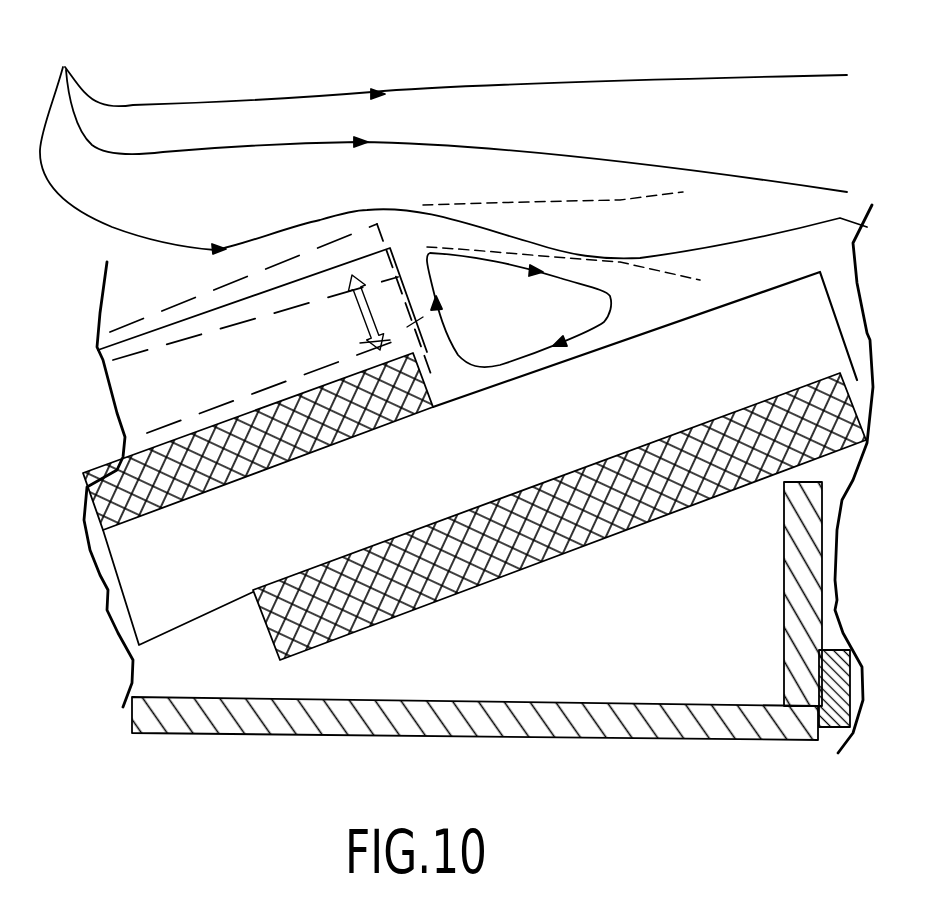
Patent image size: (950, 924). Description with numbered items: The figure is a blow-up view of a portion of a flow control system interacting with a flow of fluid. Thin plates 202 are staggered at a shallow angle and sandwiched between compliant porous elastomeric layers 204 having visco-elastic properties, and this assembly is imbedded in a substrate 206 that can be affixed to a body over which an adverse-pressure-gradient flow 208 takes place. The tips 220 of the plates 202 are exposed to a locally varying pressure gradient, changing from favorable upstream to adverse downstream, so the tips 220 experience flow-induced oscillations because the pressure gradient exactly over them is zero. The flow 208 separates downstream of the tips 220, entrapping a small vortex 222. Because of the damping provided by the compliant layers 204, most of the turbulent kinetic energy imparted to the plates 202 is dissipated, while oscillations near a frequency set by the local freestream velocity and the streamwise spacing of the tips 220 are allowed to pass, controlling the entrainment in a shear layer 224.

The thin plates 202 is at (167, 398).
The compliant porous elastomeric layers 204 is at (317, 450).
The substrate 206 is at (784, 672).
The adverse-pressure-gradient flow 208 is at (452, 146).
The tips of the plates 220 is at (370, 232).
The vortex 222 is at (597, 328).
The shear layer 224 is at (620, 263).